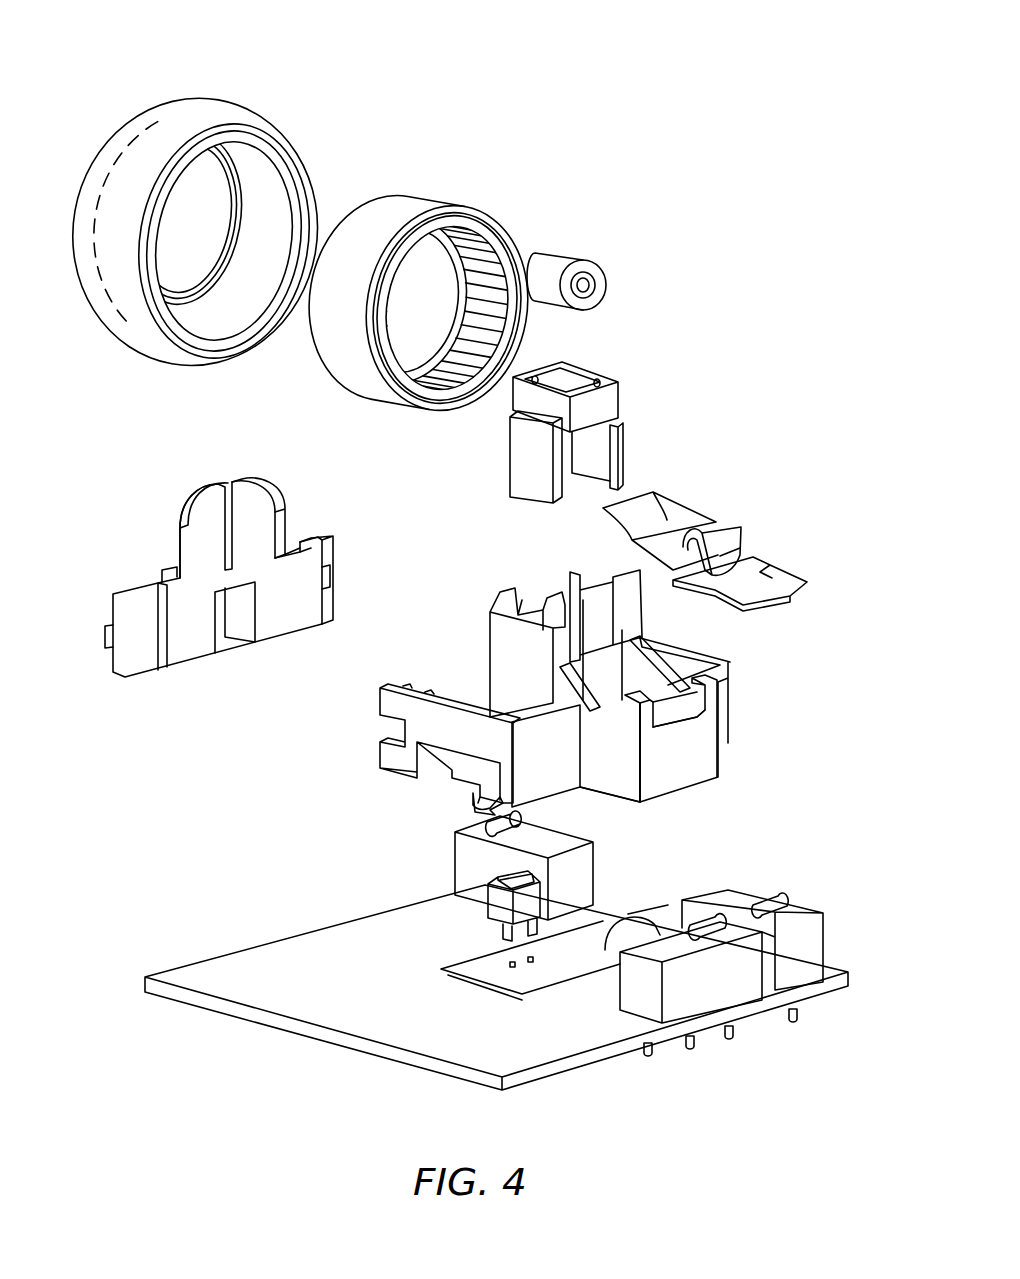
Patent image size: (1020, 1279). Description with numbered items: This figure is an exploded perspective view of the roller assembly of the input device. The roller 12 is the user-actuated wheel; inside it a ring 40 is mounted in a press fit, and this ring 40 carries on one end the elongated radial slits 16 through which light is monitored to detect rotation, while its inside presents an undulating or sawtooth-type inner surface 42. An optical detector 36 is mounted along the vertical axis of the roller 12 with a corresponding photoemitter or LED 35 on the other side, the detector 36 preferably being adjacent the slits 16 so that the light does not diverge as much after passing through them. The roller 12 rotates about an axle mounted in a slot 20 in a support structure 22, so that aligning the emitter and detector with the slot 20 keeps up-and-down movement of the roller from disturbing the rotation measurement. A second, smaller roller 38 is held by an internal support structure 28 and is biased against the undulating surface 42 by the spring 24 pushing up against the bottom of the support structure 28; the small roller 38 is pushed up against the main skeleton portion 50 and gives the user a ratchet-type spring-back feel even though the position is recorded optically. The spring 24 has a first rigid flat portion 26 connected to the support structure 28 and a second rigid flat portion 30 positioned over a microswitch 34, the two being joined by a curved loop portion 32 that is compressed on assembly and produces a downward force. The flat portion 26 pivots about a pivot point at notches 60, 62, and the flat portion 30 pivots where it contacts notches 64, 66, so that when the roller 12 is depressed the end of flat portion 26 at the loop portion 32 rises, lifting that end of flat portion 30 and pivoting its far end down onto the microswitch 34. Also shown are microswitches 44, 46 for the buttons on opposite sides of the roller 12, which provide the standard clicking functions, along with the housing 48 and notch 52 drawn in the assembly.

The roller 12 is at (227, 108).
The ring 40 is at (443, 182).
The slits 16 is at (478, 225).
The undulating inner surface 42 is at (443, 380).
The small roller 38 is at (573, 257).
The support structure 28 is at (610, 392).
The slot 20 is at (226, 469).
The support structure 22 is at (207, 535).
The flat portion 26 is at (663, 507).
The spring 24 is at (763, 516).
The loop portion 32 is at (740, 540).
The flat portion 30 is at (767, 578).
The housing 48 is at (697, 772).
The main skeleton portion 50 is at (500, 647).
The notch 60 is at (570, 660).
The notch 62 is at (640, 648).
The notch 52 is at (677, 714).
The notch 66 is at (705, 697).
The notch 64 is at (638, 732).
The microswitch 44 is at (595, 862).
The optical detector 36 is at (493, 903).
The photoemitter or LED 35 is at (630, 923).
The microswitch 34 is at (708, 990).
The microswitch 46 is at (815, 933).